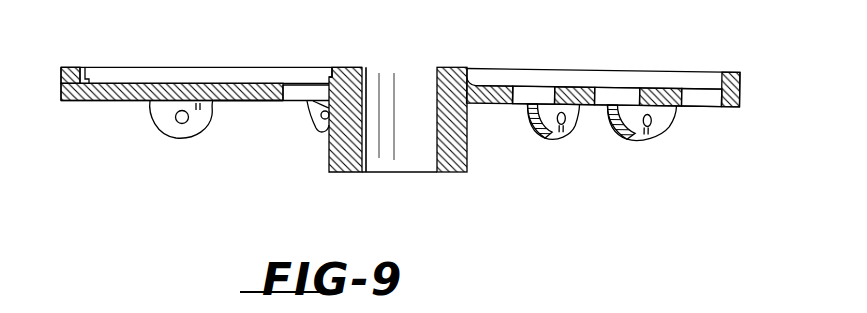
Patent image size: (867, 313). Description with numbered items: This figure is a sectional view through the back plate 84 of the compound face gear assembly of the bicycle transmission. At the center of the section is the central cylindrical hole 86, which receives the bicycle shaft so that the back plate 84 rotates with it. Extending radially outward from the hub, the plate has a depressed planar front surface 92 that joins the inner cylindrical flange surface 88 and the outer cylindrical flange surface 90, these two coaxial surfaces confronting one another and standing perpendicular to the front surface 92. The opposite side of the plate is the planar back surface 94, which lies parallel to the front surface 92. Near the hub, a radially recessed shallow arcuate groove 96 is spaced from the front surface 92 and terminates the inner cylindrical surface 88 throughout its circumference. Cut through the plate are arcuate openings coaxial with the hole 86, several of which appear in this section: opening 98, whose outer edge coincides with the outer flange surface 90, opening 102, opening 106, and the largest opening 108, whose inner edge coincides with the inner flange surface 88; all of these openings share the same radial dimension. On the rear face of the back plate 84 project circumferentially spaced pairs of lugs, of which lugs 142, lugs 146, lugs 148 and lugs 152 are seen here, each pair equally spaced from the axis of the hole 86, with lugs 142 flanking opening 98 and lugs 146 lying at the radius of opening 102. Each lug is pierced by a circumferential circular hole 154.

The back plate 84 is at (58, 72).
The central cylindrical hole 86 is at (438, 147).
The inner cylindrical flange surface 88 is at (484, 69).
The outer cylindrical flange surface 90 is at (96, 67).
The depressed planar front surface 92 is at (216, 82).
The planar back surface 94 is at (237, 102).
The radially recessed shallow arcuate groove 96 is at (326, 69).
The arcuate opening 98 is at (708, 99).
The arcuate opening 102 is at (612, 97).
The arcuate opening 106 is at (521, 97).
The arcuate opening 108 is at (294, 97).
The lugs 142 is at (657, 138).
The lugs 146 is at (564, 135).
The lugs 148 is at (188, 128).
The lugs 152 is at (322, 133).
The circumferential circular hole 154 is at (175, 117).